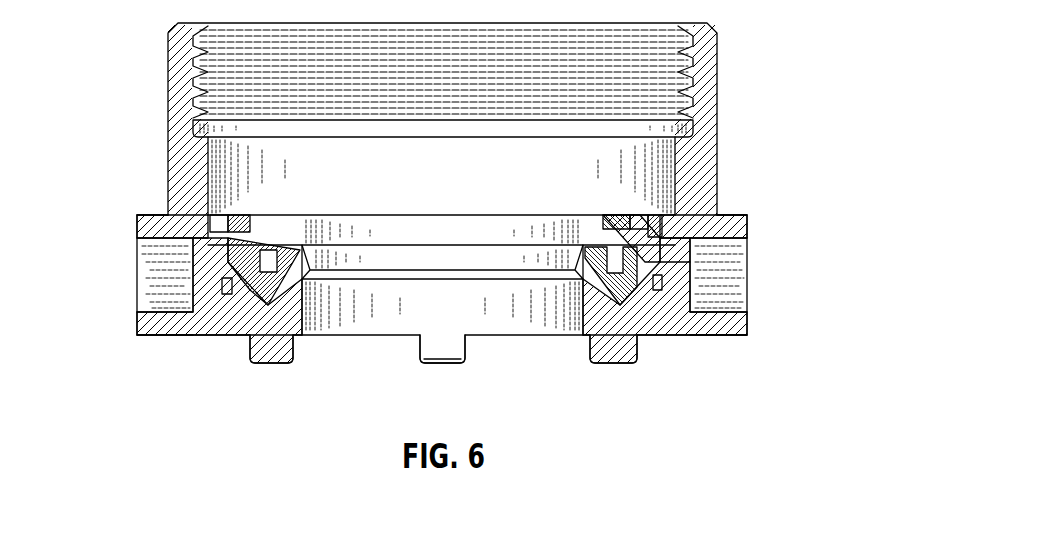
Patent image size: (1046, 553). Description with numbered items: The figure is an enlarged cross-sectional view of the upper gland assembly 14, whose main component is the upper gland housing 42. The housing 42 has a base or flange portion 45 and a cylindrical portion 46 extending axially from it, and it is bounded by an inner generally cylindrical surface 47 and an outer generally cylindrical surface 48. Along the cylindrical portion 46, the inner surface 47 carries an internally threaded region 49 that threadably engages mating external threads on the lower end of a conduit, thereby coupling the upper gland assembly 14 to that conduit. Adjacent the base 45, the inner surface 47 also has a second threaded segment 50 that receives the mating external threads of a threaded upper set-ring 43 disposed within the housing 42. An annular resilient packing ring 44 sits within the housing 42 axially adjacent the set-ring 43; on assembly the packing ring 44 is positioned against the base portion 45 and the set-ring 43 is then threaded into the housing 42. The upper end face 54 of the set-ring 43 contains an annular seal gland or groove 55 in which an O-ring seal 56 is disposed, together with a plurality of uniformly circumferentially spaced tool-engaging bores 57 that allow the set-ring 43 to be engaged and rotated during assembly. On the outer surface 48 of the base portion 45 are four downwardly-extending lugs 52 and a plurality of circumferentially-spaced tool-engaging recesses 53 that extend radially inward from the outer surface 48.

The upper gland assembly 14 is at (775, 88).
The upper gland housing 42 is at (706, 212).
The threaded upper set-ring 43 is at (662, 264).
The annular resilient packing ring 44 is at (615, 297).
The base or flange portion 45 is at (742, 226).
The cylindrical portion 46 is at (705, 70).
The inner generally cylindrical surface 47 is at (213, 175).
The outer generally cylindrical surface 48 is at (140, 232).
The internally threaded region 49 is at (197, 58).
The second threaded segment 50 is at (235, 290).
The downwardly-extending lugs 52 is at (275, 364).
The tool-engaging recesses 53 is at (153, 285).
The upper end face 54 is at (496, 214).
The annular seal gland or groove 55 is at (600, 222).
The O-ring seal 56 is at (616, 218).
The tool-engaging bores 57 is at (247, 224).